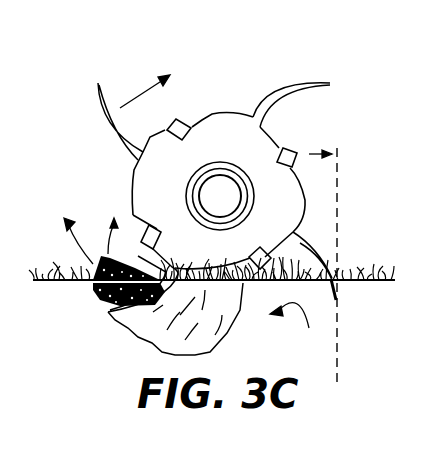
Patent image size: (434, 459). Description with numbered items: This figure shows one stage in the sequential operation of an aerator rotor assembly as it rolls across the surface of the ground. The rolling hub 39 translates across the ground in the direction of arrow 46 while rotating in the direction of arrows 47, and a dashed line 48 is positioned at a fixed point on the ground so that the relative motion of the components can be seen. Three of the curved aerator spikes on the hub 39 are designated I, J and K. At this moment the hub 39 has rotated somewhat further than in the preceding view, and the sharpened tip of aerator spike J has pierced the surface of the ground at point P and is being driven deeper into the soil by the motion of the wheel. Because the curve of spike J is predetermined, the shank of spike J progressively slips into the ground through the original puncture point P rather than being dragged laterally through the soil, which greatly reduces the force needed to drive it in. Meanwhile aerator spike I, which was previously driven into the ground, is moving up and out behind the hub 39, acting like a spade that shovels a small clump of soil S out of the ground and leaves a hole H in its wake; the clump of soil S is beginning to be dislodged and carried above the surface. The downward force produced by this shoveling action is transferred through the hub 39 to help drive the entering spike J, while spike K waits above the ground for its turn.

The hub 39 is at (213, 120).
The direction of travel arrow 46 is at (309, 154).
The direction of rotation arrow 47 is at (141, 93).
The dashed line 48 is at (338, 337).
The aerator spike K is at (279, 94).
The aerator spike J is at (313, 242).
The penetration point P is at (337, 284).
The clump of soil S is at (97, 300).
The hole H is at (227, 340).
The aerator spike I is at (209, 294).